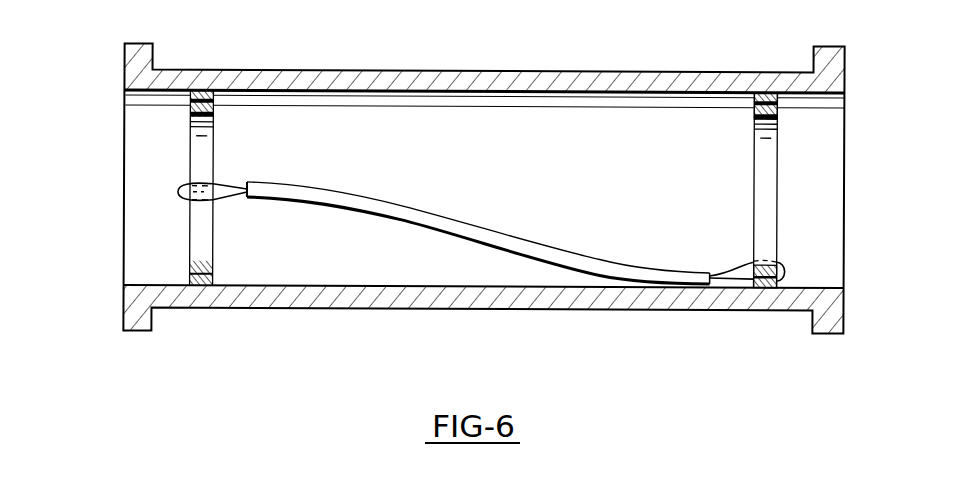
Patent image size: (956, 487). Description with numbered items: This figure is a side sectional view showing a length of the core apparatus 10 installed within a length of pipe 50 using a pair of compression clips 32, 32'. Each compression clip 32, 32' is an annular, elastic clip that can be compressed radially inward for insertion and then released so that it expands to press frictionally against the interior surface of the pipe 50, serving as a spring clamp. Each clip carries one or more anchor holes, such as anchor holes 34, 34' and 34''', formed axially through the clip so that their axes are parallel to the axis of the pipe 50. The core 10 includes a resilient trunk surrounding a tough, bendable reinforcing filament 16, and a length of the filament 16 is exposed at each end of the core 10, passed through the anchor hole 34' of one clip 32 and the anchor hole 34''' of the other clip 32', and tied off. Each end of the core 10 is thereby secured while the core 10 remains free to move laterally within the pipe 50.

The core apparatus 10 is at (326, 192).
The reinforcing filament 16 is at (214, 184).
The compression clip 32 is at (710, 154).
The compression clip 32' is at (130, 186).
The anchor hole 34 is at (789, 60).
The anchor hole 34' is at (746, 323).
The anchor hole 34''' is at (126, 218).
The pipe 50 is at (500, 72).